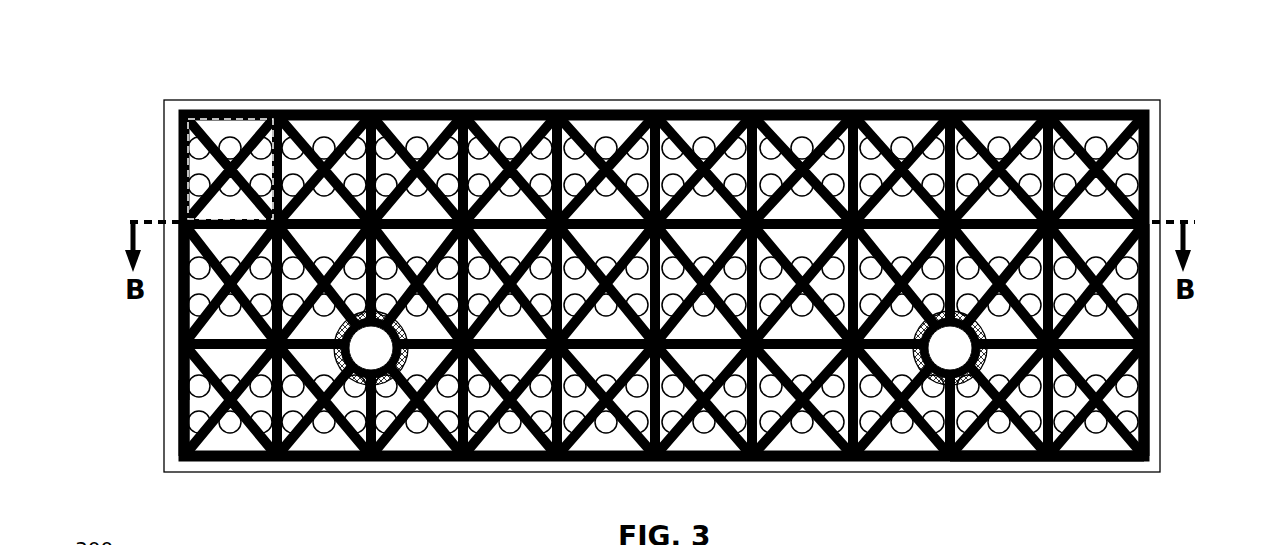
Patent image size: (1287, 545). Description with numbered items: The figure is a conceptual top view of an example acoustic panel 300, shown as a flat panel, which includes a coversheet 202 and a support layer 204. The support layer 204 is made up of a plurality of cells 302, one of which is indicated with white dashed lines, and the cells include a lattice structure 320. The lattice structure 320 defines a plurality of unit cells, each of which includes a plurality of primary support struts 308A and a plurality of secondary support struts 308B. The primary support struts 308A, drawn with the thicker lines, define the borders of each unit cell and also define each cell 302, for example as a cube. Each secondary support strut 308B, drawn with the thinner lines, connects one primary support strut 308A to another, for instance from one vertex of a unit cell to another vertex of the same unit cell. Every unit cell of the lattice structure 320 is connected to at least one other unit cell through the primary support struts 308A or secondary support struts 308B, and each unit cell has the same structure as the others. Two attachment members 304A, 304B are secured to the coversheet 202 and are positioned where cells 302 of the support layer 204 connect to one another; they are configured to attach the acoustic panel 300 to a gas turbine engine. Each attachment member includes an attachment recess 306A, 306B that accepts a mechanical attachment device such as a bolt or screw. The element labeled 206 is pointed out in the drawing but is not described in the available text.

The acoustic panel 300 is at (184, 65).
The coversheet 202 is at (1136, 100).
The support layer 204 is at (1186, 385).
The frame side member 206 is at (1150, 328).
The cell 302 is at (164, 162).
The attachment member 304A is at (345, 374).
The attachment member 304B is at (924, 374).
The attachment recess 306A is at (373, 350).
The attachment recess 306B is at (952, 350).
The primary support strut 308A is at (181, 268).
The secondary support strut 308B is at (181, 418).
The lattice structure 320 is at (1150, 433).